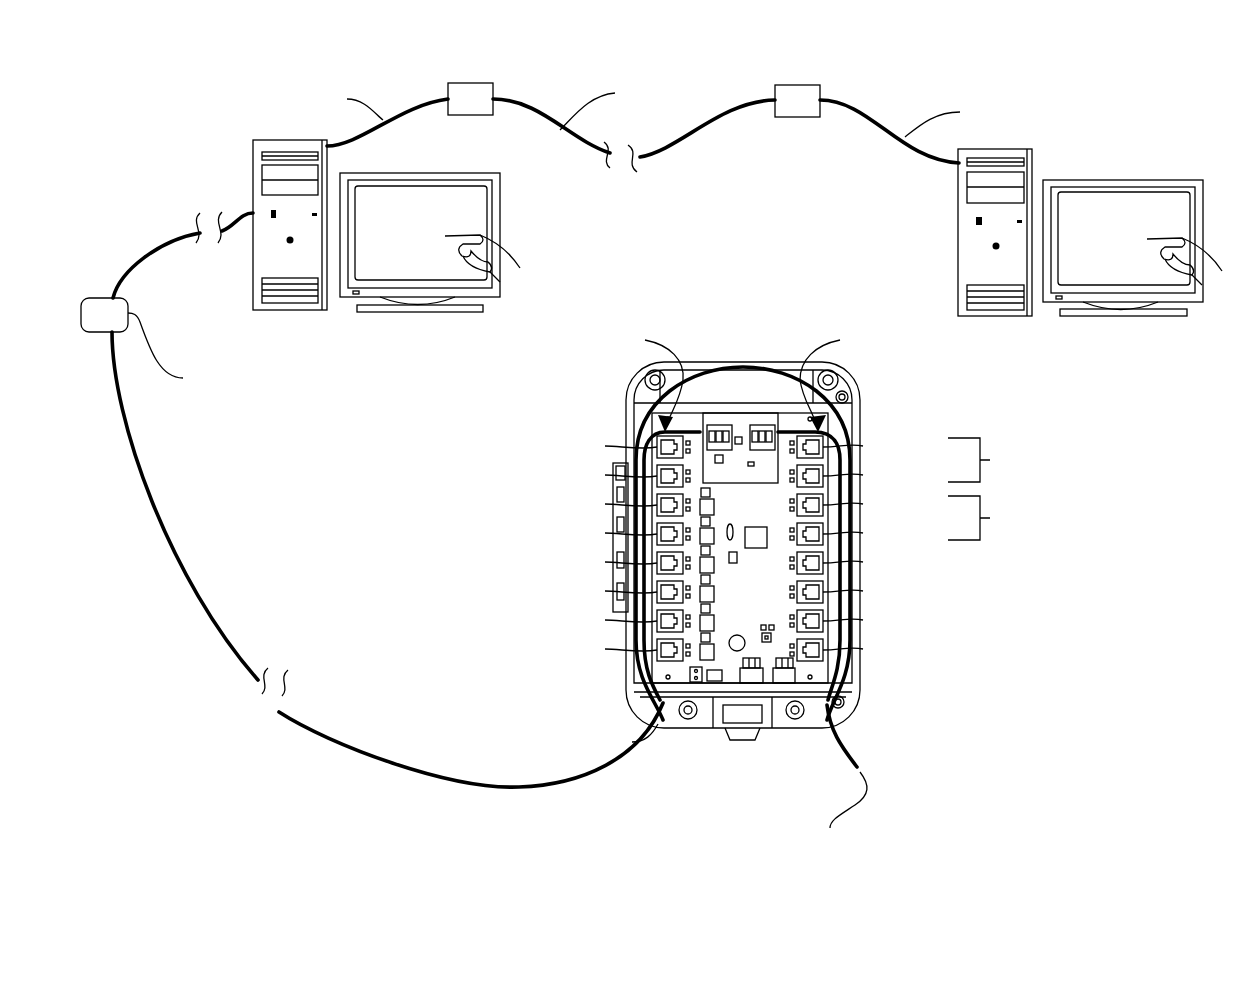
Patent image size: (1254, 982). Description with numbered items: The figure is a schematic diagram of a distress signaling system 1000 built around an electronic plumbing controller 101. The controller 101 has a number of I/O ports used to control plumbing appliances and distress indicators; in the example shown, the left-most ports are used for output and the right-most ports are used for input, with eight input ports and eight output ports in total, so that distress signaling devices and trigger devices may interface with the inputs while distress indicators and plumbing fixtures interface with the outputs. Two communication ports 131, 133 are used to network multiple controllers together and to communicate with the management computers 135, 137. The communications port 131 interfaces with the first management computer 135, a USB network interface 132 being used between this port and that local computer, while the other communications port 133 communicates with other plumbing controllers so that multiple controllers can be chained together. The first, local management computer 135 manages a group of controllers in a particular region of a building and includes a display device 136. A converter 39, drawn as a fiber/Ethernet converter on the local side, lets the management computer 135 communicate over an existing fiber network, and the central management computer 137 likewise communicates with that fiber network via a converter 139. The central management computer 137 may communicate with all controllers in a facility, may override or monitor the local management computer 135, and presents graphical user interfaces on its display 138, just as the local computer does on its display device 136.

The distress signaling system 1000 is at (185, 712).
The converter 39 is at (509, 60).
The converter 139 is at (835, 60).
The first management computer 135 is at (328, 303).
The display device 136 is at (430, 242).
The central management computer 137 is at (1033, 310).
The display 138 is at (1132, 248).
The USB network interface 132 is at (178, 356).
The electronic plumbing controller 101 is at (745, 559).
The communications port 131 is at (718, 426).
The communications port 133 is at (852, 356).